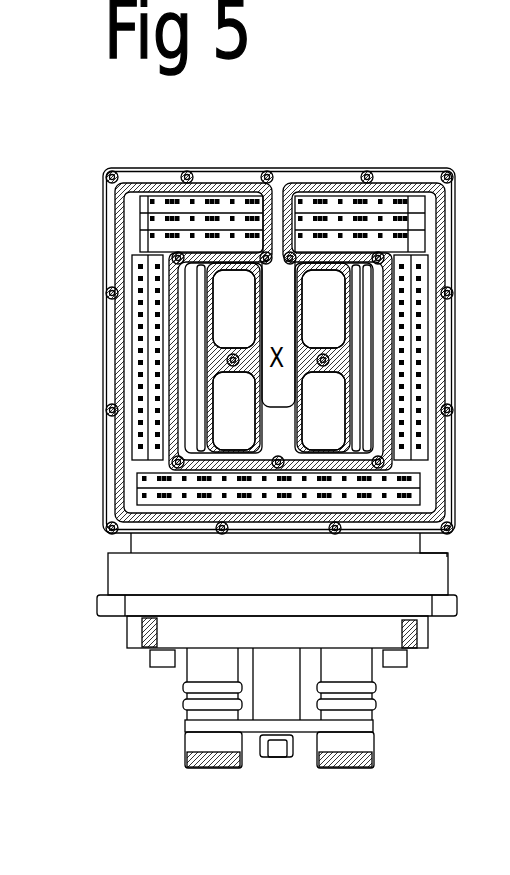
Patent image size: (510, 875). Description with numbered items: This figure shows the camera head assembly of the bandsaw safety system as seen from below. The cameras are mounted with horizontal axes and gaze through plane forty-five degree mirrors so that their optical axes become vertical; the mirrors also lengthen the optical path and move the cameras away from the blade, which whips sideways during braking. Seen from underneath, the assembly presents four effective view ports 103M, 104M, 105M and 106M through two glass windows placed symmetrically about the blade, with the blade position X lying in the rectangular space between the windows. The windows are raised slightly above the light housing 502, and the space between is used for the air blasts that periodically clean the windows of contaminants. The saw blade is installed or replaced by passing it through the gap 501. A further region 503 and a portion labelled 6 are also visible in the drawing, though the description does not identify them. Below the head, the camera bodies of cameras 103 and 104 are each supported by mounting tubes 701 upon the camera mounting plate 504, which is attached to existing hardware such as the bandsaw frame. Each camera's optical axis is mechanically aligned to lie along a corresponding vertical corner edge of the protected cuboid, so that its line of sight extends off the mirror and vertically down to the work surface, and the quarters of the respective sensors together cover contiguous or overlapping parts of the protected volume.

The gap 501 is at (277, 183).
The light housing 502 is at (205, 170).
The second module compartment 503 is at (334, 192).
The camera mounting plate 504 is at (100, 607).
The mounting tube 701 is at (355, 702).
The camera 103 is at (215, 770).
The camera 104 is at (370, 770).
The effective view port 103M is at (253, 416).
The effective view port 104M is at (342, 416).
The effective view port 105M is at (342, 310).
The effective view port 106M is at (253, 310).
The partially visible reference 6 is at (505, 499).